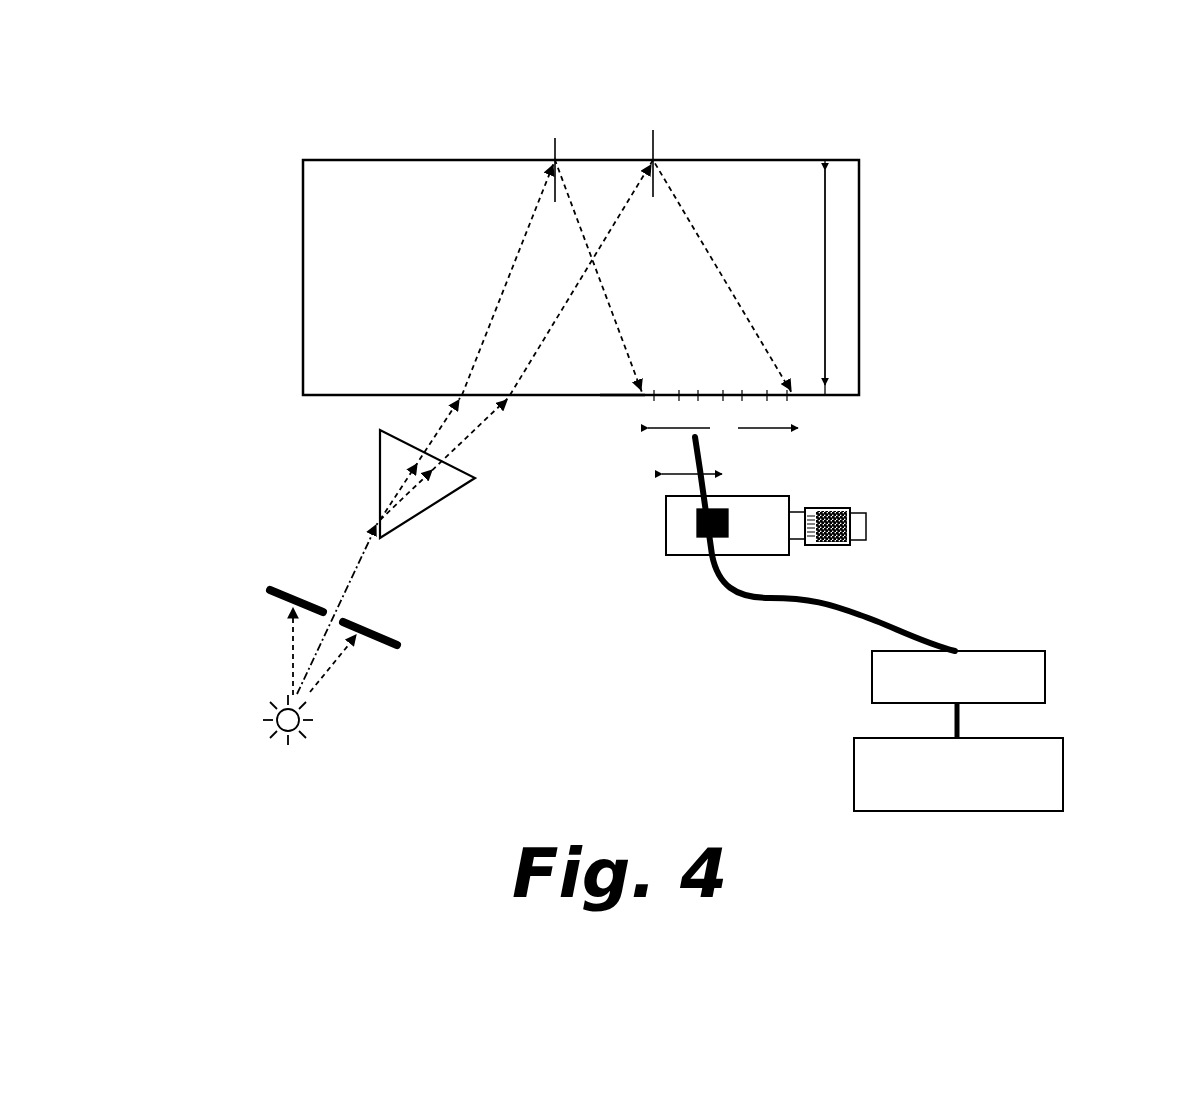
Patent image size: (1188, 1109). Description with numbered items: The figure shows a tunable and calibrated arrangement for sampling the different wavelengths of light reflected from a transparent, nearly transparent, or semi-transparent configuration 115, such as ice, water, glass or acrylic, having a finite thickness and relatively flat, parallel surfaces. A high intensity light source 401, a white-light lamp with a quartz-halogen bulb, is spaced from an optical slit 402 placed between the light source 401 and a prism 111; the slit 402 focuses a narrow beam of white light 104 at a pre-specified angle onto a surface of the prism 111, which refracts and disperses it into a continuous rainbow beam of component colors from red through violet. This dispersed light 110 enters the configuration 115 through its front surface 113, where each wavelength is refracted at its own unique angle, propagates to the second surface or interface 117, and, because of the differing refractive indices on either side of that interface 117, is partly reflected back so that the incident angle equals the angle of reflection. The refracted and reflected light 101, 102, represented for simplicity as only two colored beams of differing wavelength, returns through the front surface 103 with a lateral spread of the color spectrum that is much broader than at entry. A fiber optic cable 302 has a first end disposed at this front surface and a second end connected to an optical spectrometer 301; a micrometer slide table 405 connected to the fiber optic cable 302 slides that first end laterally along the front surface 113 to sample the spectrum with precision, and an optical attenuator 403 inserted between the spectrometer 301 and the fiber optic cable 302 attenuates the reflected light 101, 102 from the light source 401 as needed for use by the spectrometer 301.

The refracted and reflected light beam 101 is at (537, 180).
The refracted and reflected light beam 102 is at (636, 178).
The front surface scale 103 is at (803, 414).
The narrow beam of white light 104 is at (352, 556).
The refracted light rays 110 is at (462, 397).
The prism 111 is at (380, 482).
The front surface 113 is at (632, 398).
The configuration 115 is at (581, 254).
The second surface interface 117 is at (832, 158).
The optical spectrometer 301 is at (1063, 758).
The fiber optic cable 302 is at (905, 620).
The high intensity light source 401 is at (262, 703).
The optical slit 402 is at (268, 590).
The optical attenuator 403 is at (1045, 651).
The micrometer slide table 405 is at (835, 500).